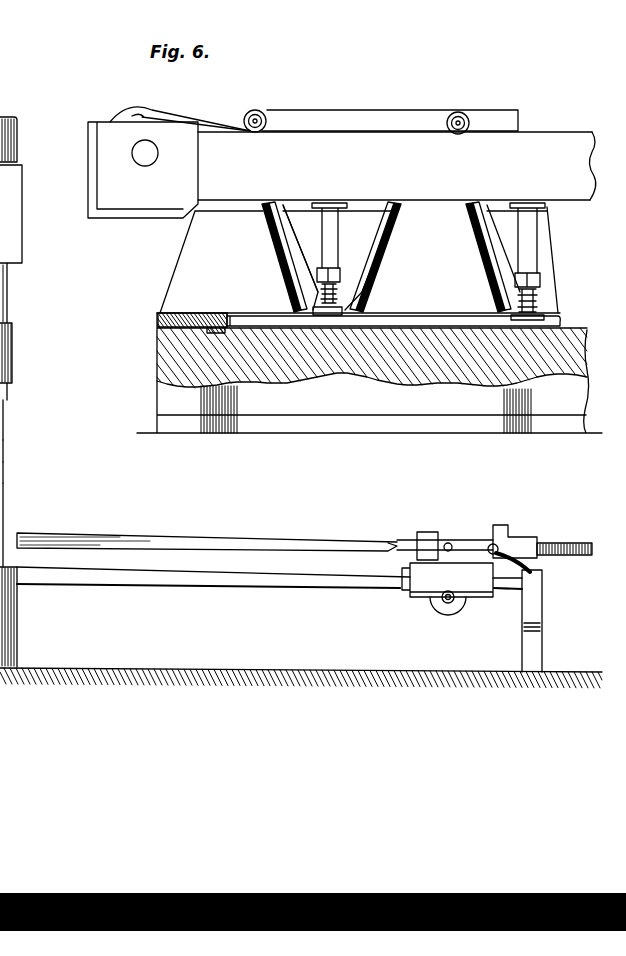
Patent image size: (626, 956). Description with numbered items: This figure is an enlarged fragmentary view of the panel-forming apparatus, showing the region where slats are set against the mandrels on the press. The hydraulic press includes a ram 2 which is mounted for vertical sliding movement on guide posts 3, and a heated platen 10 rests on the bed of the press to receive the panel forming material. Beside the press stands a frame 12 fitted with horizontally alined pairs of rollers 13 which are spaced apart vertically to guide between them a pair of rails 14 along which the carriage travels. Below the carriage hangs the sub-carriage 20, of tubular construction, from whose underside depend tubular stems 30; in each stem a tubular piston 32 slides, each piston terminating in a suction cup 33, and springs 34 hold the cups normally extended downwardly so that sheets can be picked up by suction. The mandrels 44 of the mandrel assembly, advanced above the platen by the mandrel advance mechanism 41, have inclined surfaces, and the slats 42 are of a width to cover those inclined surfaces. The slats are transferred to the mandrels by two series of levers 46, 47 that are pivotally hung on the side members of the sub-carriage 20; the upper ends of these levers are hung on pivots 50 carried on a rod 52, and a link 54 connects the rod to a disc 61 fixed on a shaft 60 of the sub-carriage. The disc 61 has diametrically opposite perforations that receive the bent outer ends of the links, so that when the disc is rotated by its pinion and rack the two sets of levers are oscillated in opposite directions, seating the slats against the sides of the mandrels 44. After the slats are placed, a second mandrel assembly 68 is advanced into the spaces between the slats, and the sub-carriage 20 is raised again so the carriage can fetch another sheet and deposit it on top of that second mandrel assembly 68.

The ram 2 is at (13, 351).
The guide posts 3 is at (4, 434).
The platen 10 is at (166, 355).
The frame 12 is at (4, 512).
The rollers 13 is at (4, 454).
The rails 14 is at (4, 474).
The sub-carriage 20 is at (582, 136).
The tubular stems 30 is at (340, 215).
The tubular pistons 32 is at (352, 300).
The suction cup 33 is at (560, 320).
The springs 34 is at (296, 306).
The mandrel advance mechanism 41 is at (427, 615).
The slats 42 is at (273, 266).
The mandrels 44 is at (175, 262).
The levers 46 is at (268, 232).
The levers 47 is at (380, 272).
The pivots 50 is at (261, 112).
The rod 52 is at (400, 98).
The link 54 is at (200, 127).
The shaft 60 is at (152, 165).
The disc 61 is at (118, 114).
The second mandrel assembly 68 is at (222, 514).